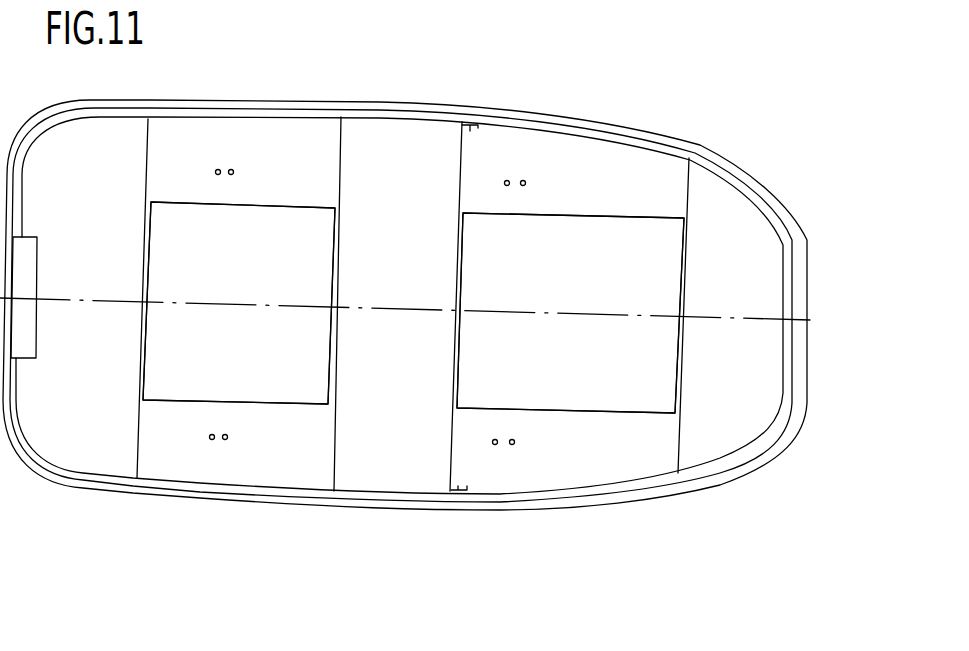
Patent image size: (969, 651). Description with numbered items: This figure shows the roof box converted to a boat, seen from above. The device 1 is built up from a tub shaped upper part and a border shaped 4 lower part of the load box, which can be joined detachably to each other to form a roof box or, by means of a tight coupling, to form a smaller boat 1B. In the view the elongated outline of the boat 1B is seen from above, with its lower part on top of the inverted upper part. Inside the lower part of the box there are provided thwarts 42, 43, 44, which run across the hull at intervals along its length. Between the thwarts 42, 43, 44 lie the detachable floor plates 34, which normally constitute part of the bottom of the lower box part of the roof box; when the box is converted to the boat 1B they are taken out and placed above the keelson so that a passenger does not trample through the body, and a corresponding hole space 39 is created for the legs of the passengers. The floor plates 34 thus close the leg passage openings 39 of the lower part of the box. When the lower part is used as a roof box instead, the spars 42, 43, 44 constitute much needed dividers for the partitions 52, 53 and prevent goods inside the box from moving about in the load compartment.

The device 1 is at (712, 90).
The boat 1B is at (754, 133).
The border shaped 4 is at (549, 511).
The detachable floor 34 is at (270, 263).
The hole space 39 is at (483, 270).
The thwart 42 is at (98, 455).
The thwart 43 is at (380, 474).
The thwart 44 is at (715, 430).
The partition 52 is at (186, 460).
The partition 53 is at (518, 476).